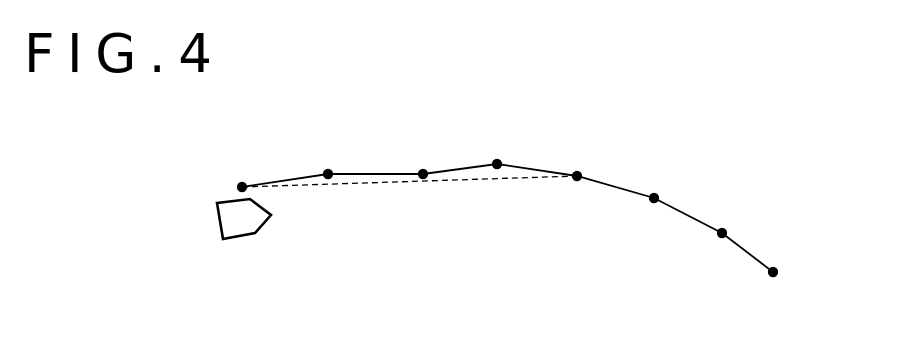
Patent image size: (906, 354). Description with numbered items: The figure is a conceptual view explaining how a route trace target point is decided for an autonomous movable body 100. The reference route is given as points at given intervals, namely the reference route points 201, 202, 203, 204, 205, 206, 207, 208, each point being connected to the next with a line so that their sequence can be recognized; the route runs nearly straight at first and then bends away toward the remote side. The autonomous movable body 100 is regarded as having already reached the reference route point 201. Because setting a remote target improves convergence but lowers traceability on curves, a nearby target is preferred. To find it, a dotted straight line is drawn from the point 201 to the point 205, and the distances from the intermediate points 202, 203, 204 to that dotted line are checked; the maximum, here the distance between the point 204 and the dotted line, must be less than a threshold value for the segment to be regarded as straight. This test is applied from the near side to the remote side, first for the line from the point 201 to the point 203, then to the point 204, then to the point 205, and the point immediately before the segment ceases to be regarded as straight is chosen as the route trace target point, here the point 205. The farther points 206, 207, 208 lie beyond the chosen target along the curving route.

The autonomous movable body 100 is at (217, 223).
The reference route point 201 is at (242, 183).
The reference route point 202 is at (328, 170).
The reference route point 203 is at (423, 170).
The reference route point 204 is at (497, 161).
The reference route point 205 is at (577, 173).
The reference route point 206 is at (655, 195).
The reference route point 207 is at (724, 229).
The reference route point 208 is at (774, 268).